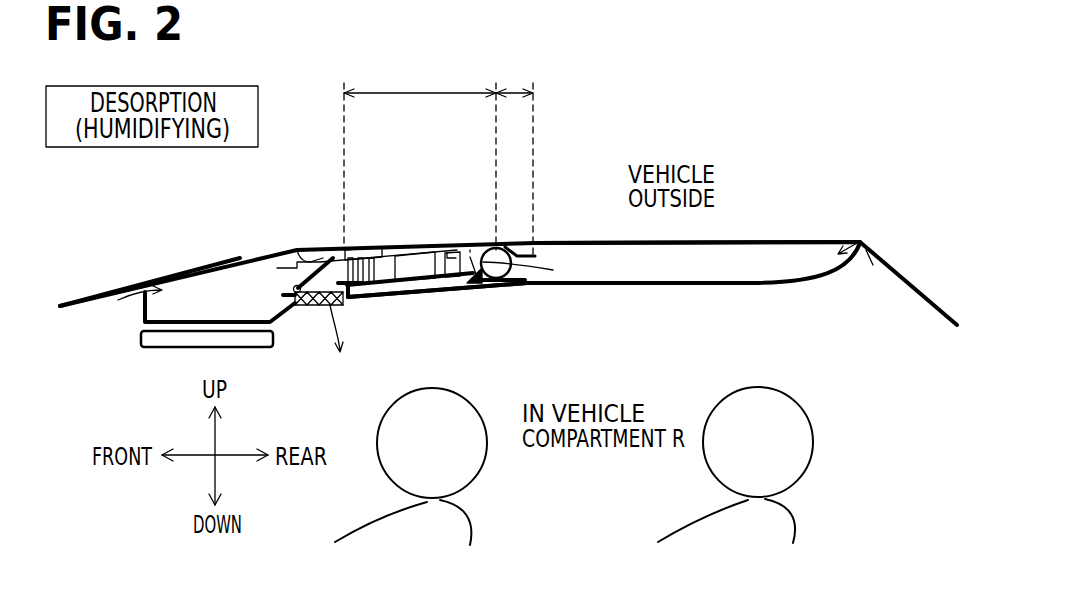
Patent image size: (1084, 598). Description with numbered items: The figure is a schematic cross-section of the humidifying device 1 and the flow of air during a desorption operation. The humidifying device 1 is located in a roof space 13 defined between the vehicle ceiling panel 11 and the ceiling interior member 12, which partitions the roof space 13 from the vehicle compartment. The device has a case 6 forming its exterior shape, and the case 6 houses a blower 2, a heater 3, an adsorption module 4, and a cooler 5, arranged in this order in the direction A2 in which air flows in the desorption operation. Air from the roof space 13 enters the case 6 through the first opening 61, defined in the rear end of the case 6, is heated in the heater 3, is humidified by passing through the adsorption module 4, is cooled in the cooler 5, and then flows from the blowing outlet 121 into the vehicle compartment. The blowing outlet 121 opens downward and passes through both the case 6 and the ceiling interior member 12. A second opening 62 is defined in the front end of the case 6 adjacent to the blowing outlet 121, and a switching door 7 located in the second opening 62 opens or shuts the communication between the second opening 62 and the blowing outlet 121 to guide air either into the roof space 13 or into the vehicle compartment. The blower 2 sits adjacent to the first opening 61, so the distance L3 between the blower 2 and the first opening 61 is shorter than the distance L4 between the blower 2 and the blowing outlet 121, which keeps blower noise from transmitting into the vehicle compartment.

The humidifying device 1 is at (422, 312).
The blower 2 is at (510, 245).
The heater 3 is at (465, 250).
The adsorption module 4 is at (425, 250).
The cooler 5 is at (372, 250).
The case 6 is at (322, 247).
The switching door 7 is at (295, 255).
The vehicle ceiling panel 11 is at (558, 242).
The ceiling interior member 12 is at (565, 286).
The roof space 13 is at (598, 258).
The first opening 61 is at (525, 290).
The second opening 62 is at (243, 258).
The blowing outlet 121 is at (300, 308).
The direction of air flow in desorption operation A2 is at (475, 235).
The distance between blower and first opening L3 is at (514, 155).
The distance between blower and blowing outlet L4 is at (420, 153).